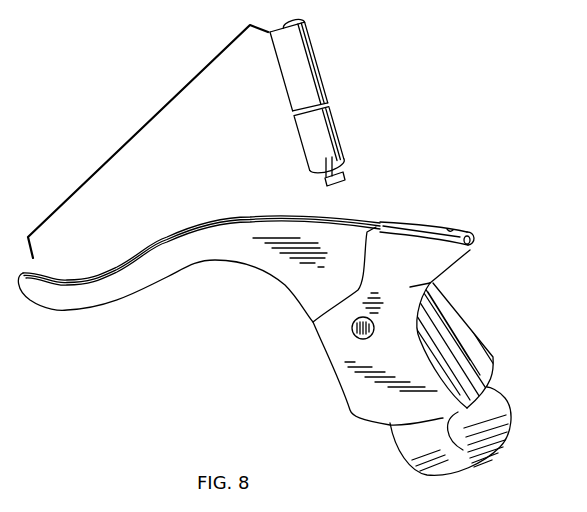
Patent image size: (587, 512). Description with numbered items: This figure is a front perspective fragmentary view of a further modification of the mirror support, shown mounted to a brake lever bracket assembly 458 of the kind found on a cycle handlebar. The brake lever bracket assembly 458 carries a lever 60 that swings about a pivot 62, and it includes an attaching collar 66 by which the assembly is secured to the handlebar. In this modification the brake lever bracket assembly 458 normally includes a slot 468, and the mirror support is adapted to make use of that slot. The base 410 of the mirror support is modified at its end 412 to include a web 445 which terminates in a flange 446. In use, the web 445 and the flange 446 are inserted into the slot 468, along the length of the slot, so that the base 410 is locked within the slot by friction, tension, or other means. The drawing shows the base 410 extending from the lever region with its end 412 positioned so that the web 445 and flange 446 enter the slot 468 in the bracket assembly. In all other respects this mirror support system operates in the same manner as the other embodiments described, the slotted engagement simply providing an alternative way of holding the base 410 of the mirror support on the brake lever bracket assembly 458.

The base 410 is at (328, 61).
The end 412 is at (330, 128).
The web 445 is at (325, 179).
The flange 446 is at (345, 175).
The lever 60 is at (195, 252).
The pivot 62 is at (374, 330).
The slot 468 is at (447, 223).
The brake lever bracket assembly 458 is at (437, 285).
The attaching collar 66 is at (500, 407).